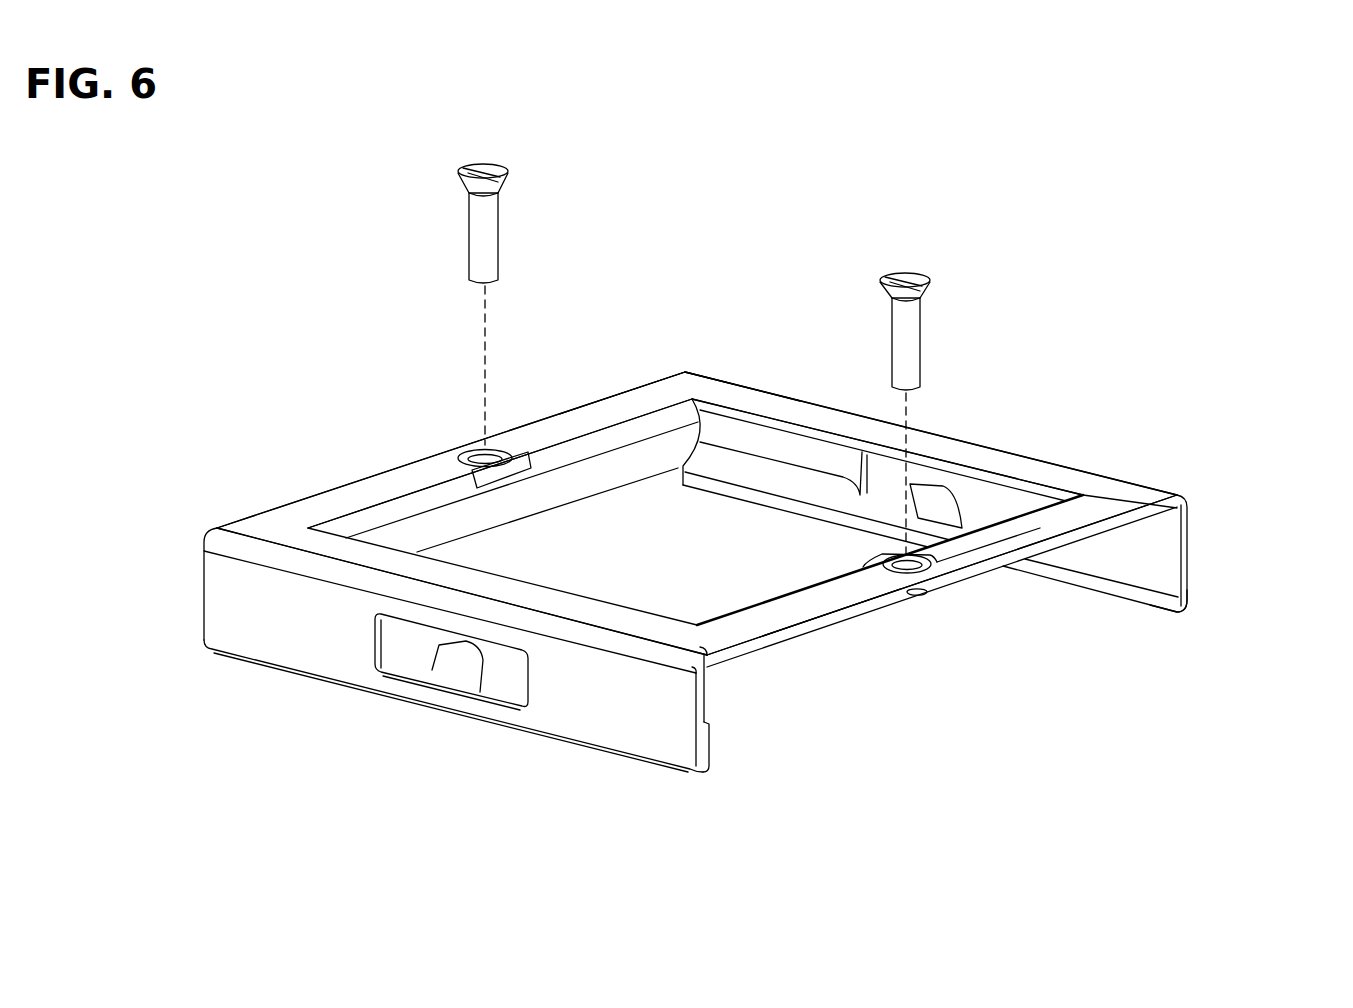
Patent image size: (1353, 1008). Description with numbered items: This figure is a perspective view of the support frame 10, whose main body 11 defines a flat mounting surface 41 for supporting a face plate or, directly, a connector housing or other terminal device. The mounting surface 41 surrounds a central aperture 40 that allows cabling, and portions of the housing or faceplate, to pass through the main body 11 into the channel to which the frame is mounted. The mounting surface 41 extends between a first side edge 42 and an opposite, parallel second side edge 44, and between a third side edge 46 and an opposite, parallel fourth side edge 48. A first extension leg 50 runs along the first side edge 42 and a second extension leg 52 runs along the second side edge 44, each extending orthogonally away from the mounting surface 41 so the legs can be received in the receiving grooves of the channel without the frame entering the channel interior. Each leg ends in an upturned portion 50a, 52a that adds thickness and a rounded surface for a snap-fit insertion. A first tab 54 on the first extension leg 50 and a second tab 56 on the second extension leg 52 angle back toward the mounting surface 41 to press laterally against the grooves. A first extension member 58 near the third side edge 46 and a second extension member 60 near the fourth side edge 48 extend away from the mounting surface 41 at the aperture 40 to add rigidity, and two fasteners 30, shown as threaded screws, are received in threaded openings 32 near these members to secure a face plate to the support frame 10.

The support frame 10 is at (280, 533).
The main body 11 is at (682, 368).
The fasteners 30 is at (488, 237).
The threaded openings 32 is at (470, 452).
The central aperture 40 is at (767, 582).
The mounting surface 41 is at (1043, 530).
The first side edge 42 is at (268, 555).
The second side edge 44 is at (1030, 457).
The third side edge 46 is at (833, 618).
The fourth side edge 48 is at (365, 475).
The first extension leg 50 is at (665, 720).
The upturned portion 50a is at (710, 742).
The second extension leg 52 is at (1168, 530).
The upturned portion 52a is at (1162, 582).
The first tab 54 is at (450, 664).
The second tab 56 is at (923, 500).
The first extension member 58 is at (905, 602).
The second extension member 60 is at (510, 507).